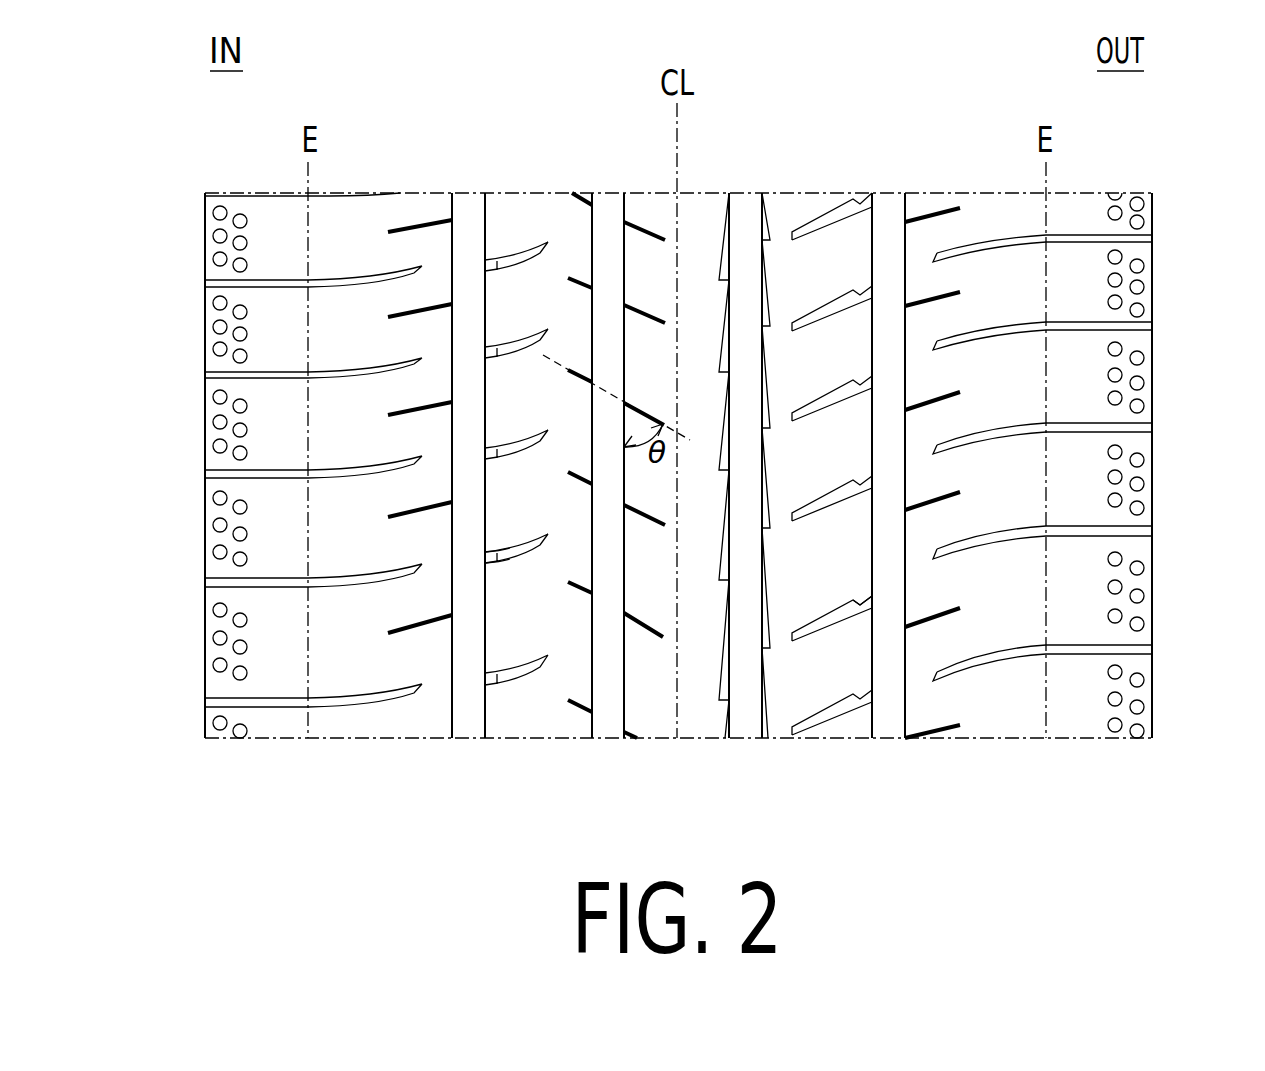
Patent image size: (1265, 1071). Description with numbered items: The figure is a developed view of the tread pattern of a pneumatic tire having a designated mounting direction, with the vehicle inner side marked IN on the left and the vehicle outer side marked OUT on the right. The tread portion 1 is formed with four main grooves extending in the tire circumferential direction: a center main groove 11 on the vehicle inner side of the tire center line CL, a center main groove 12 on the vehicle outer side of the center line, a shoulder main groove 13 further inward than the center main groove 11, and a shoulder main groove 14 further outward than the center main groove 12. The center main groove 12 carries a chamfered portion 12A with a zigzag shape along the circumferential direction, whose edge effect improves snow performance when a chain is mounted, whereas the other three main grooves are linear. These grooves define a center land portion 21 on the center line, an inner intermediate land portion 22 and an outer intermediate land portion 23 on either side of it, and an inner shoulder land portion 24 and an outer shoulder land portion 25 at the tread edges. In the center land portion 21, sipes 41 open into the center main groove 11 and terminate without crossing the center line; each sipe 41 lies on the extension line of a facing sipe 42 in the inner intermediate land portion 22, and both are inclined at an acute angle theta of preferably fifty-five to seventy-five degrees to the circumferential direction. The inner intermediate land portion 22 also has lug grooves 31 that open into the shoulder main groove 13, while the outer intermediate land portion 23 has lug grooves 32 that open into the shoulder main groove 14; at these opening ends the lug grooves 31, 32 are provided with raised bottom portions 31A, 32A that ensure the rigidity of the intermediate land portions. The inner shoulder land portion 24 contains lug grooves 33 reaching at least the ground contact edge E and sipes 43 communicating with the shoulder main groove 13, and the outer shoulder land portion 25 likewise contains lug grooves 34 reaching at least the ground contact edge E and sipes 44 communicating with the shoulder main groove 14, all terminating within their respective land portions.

The tread portion 1 is at (1113, 183).
The center main groove 11 is at (608, 217).
The center main groove 12 is at (722, 468).
The chamfered portion 12A is at (765, 650).
The shoulder main groove 13 is at (466, 217).
The shoulder main groove 14 is at (885, 217).
The center land portion 21 is at (673, 468).
The inner intermediate land portion 22 is at (540, 468).
The outer intermediate land portion 23 is at (1014, 468).
The inner shoulder land portion 24 is at (328, 468).
The outer shoulder land portion 25 is at (1028, 468).
The lug grooves 31 is at (520, 560).
The raised bottom portion 31A is at (495, 565).
The lug grooves 32 is at (817, 612).
The raised bottom portion 32A is at (862, 588).
The lug grooves 33 is at (357, 588).
The lug grooves 34 is at (1068, 650).
The sipes 41 is at (650, 633).
The sipes 42 is at (577, 595).
The sipes 43 is at (435, 625).
The sipes 44 is at (930, 620).